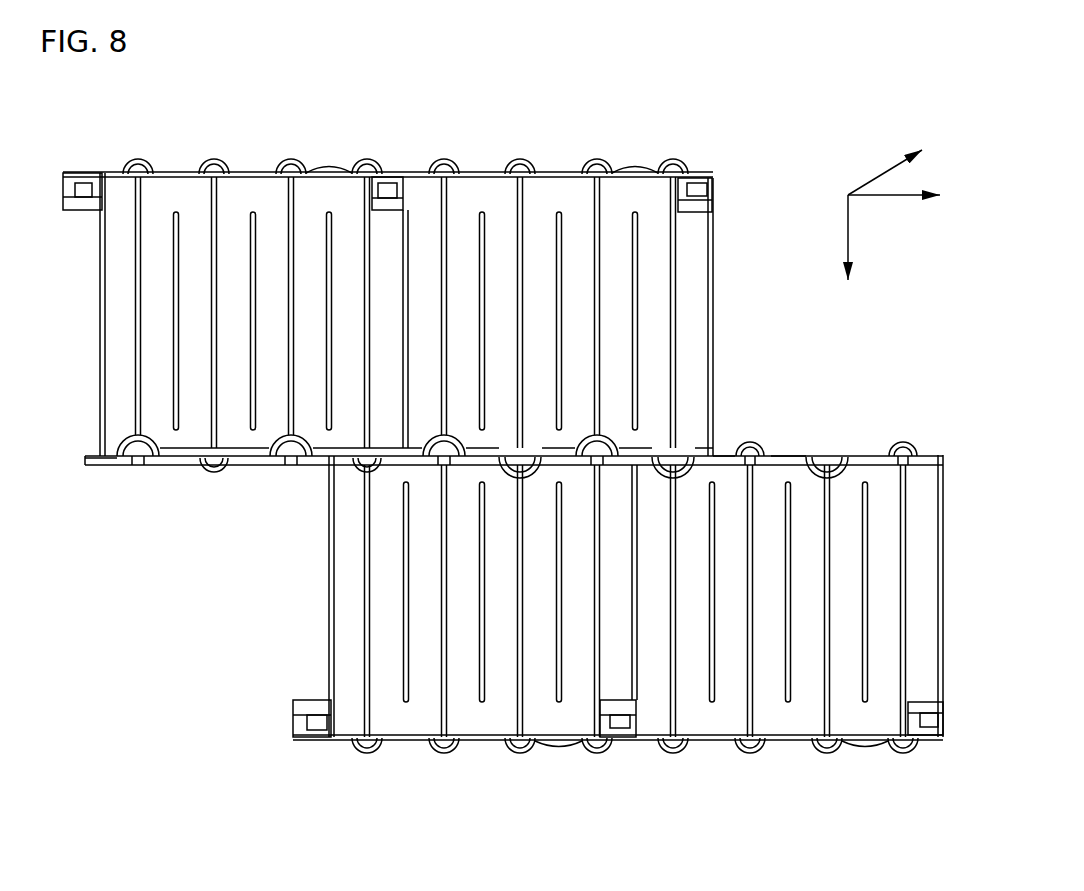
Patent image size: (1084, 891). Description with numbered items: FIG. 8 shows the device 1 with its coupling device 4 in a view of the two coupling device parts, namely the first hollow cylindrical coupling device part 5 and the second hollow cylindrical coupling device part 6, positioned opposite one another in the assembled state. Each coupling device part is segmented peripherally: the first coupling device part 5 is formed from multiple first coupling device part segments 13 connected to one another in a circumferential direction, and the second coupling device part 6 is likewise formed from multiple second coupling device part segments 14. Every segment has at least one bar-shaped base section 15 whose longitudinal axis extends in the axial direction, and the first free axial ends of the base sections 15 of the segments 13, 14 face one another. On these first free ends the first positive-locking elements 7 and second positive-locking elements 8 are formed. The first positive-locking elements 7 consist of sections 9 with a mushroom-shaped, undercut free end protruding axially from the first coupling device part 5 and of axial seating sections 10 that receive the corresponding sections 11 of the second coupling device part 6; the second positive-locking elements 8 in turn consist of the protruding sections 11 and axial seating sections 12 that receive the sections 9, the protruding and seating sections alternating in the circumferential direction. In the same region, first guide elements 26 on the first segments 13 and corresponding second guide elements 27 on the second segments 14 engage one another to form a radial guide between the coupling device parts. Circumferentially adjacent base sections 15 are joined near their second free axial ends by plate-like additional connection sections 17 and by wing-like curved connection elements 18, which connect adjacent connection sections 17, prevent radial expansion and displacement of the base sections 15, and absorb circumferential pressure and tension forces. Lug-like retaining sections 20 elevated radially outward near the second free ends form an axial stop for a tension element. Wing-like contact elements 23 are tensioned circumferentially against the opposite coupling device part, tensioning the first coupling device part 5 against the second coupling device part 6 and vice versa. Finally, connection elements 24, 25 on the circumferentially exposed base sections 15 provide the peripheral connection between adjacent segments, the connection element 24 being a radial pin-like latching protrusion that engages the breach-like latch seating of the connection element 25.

The device 1 is at (775, 130).
The coupling device 4 is at (245, 660).
The first hollow cylindrical coupling device part 5 is at (262, 162).
The second hollow cylindrical coupling device part 6 is at (640, 748).
The first positive-locking element 7 is at (116, 495).
The first guide element 26 is at (135, 476).
The second positive-locking element 8 is at (811, 522).
The second guide element 27 is at (791, 425).
The protruding section 9 is at (216, 472).
The axial seating section 10 is at (292, 460).
The protruding section 11 is at (753, 440).
The axial seating section 12 is at (830, 453).
The first coupling device part segment 13 is at (192, 163).
The second coupling device part segment 14 is at (455, 768).
The bar-shaped base section 15 is at (695, 263).
The additional plate-like connection section 17 is at (560, 172).
The wing-like curved connection element 18 is at (520, 165).
The lug-like retaining section 20 is at (640, 161).
The wing-like contact element 23 is at (95, 455).
The connection element 24 is at (388, 190).
The connection element 25 is at (83, 183).